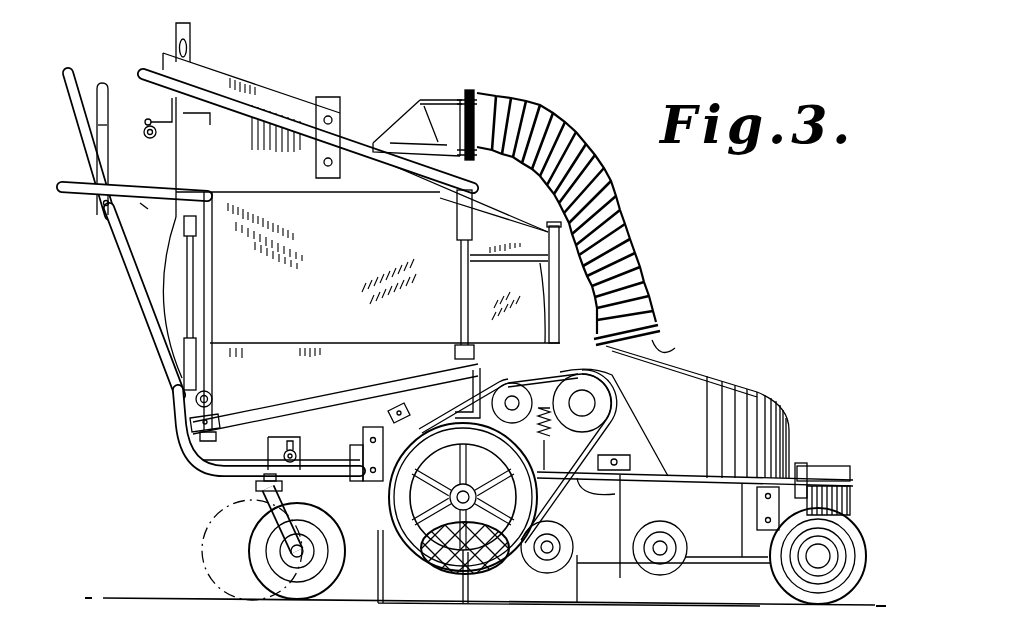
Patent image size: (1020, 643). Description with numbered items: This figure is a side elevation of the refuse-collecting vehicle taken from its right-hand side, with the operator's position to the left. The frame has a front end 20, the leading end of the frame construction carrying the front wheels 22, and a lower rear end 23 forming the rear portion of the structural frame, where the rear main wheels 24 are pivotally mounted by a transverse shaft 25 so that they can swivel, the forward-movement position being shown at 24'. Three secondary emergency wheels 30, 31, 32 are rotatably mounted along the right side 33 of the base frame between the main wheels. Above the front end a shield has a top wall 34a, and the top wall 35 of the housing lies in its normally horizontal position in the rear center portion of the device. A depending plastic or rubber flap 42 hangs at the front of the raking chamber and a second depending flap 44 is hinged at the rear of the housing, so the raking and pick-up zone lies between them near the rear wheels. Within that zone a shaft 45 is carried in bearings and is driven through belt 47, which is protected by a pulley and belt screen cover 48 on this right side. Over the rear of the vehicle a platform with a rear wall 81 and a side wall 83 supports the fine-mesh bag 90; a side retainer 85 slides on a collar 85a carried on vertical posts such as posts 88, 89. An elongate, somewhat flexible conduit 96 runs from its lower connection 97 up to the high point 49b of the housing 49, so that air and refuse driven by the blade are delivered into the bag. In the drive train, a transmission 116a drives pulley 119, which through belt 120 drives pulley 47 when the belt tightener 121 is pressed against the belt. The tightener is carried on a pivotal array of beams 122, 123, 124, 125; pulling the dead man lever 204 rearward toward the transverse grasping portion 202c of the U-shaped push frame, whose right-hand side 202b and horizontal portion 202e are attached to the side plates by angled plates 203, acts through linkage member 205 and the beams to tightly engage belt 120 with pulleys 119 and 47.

The front end 20 is at (854, 498).
The front wheels 22 is at (859, 536).
The lower rear end 23 is at (270, 441).
The rear main wheels 24 is at (297, 567).
The rear wheels in forward-movement position 24' is at (224, 550).
The transverse shaft 25 is at (284, 484).
The secondary wheel 30 is at (676, 523).
The secondary wheel 31 is at (568, 533).
The secondary wheel 32 is at (411, 562).
The right side of base frame 33 is at (621, 550).
The top wall of shield 34a is at (836, 466).
The top wall of housing 35 is at (631, 459).
The depending flap 42 is at (575, 588).
The second depending flap 44 is at (380, 598).
The shaft 45 is at (476, 491).
The belt 47 is at (447, 437).
The pulley/belt screen cover 48 is at (505, 566).
The housing 49 is at (728, 381).
The high point of housing 49b is at (690, 363).
The rear wall 81 is at (178, 407).
The side wall 83 is at (246, 394).
The side retainer 85 is at (332, 347).
The collar 85a is at (186, 373).
The vertical post 88 is at (558, 325).
The vertical post 89 is at (185, 246).
The bag 90 is at (165, 283).
The flexible conduit 96 is at (609, 187).
The connection 97 is at (664, 355).
The transmission 116a is at (606, 497).
The pulley 119 is at (612, 407).
The belt 120 is at (606, 442).
The belt tightener 121 is at (510, 381).
The beam 122 is at (470, 387).
The beam 123 is at (512, 362).
The beam 124 is at (352, 398).
The beam 125 is at (212, 331).
The right hand side of U-shaped frame 202b is at (125, 259).
The rearward transverse grasping portion 202c is at (69, 73).
The horizontal portion of U-shaped frame 202e is at (212, 478).
The angled plate 203 is at (300, 441).
The dead man switch 204 is at (109, 99).
The linkage member 205 is at (147, 200).